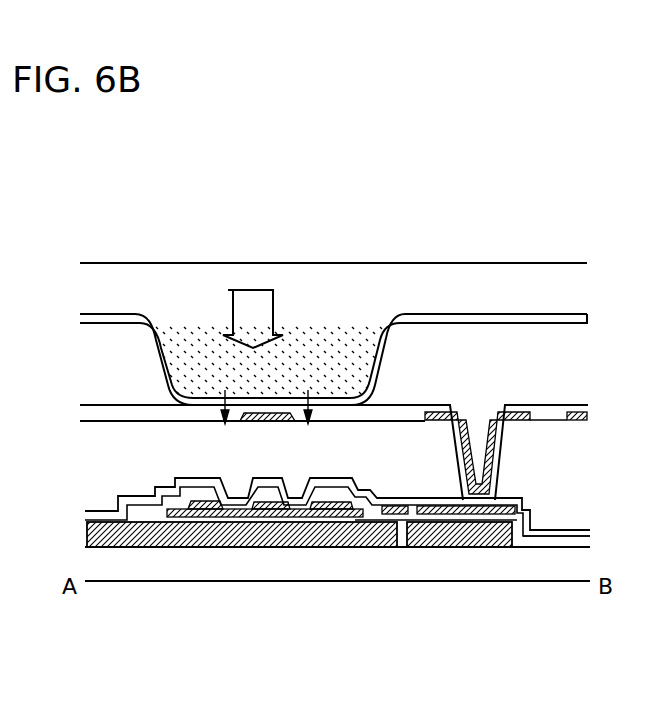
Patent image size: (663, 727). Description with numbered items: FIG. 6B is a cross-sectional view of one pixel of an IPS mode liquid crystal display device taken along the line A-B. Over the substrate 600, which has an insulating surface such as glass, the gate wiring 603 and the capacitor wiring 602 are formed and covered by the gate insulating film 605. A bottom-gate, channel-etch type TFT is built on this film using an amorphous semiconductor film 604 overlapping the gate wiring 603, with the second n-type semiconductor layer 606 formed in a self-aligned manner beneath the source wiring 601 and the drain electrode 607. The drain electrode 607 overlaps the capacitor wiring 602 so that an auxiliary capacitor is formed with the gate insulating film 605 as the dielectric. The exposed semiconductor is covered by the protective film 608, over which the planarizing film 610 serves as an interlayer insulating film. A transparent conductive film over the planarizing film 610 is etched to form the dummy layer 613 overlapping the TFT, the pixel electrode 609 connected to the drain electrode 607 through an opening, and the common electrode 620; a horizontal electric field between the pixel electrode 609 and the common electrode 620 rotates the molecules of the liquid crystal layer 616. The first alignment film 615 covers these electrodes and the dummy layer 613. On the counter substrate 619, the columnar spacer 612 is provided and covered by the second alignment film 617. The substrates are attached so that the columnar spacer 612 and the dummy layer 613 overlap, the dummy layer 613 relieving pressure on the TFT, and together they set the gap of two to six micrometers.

The substrate 600 is at (483, 573).
The source wiring 601 is at (170, 503).
The capacitor wiring 602 is at (430, 530).
The gate wiring 603 is at (188, 492).
The amorphous semiconductor film 604 is at (318, 507).
The gate insulating film 605 is at (585, 543).
The second n-type semiconductor layer 606 is at (262, 486).
The drain electrode 607 is at (265, 505).
The protective film 608 is at (583, 530).
The pixel electrode 609 is at (500, 453).
The planarizing film 610 is at (407, 453).
The columnar spacer 612 is at (225, 345).
The dummy layer 613 is at (283, 406).
The first alignment film 615 is at (570, 402).
The liquid crystal layer 616 is at (543, 372).
The second alignment film 617 is at (572, 310).
The counter substrate 619 is at (527, 278).
The common electrode 620 is at (580, 420).